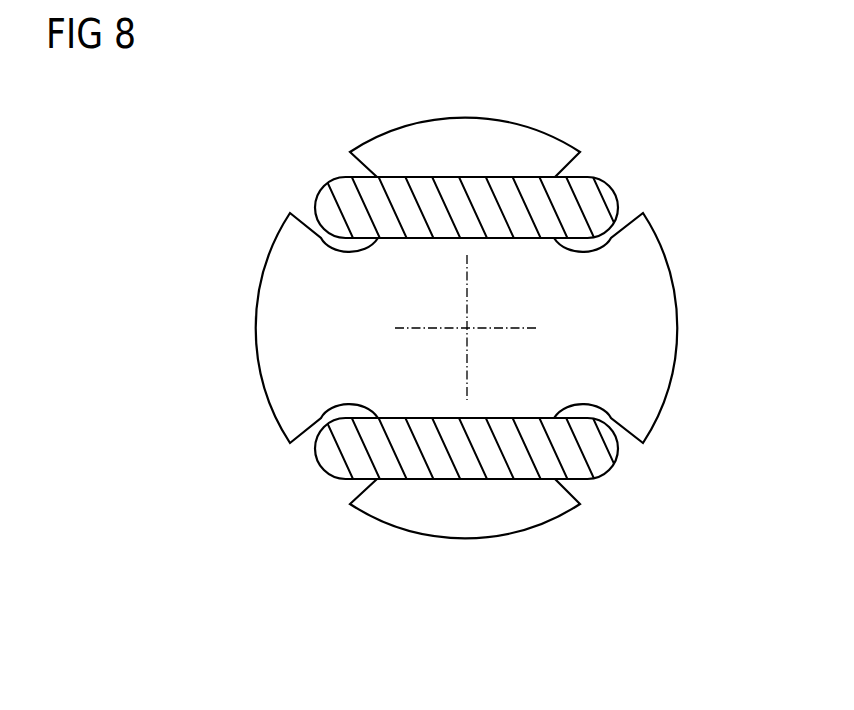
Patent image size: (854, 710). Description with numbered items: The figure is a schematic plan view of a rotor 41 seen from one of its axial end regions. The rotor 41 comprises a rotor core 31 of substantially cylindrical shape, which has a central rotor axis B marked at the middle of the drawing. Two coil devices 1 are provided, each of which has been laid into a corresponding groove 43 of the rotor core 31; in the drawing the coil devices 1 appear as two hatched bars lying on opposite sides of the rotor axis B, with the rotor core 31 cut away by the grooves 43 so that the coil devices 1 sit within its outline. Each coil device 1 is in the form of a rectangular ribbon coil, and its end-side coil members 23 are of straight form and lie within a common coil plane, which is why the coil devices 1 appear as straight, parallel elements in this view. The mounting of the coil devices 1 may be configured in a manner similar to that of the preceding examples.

The coil device 1 is at (598, 460).
The end-side coil member 23 is at (490, 331).
The rotor core 31 is at (672, 380).
The rotor 41 is at (390, 88).
The groove 43 is at (304, 203).
The central rotor axis B is at (467, 329).